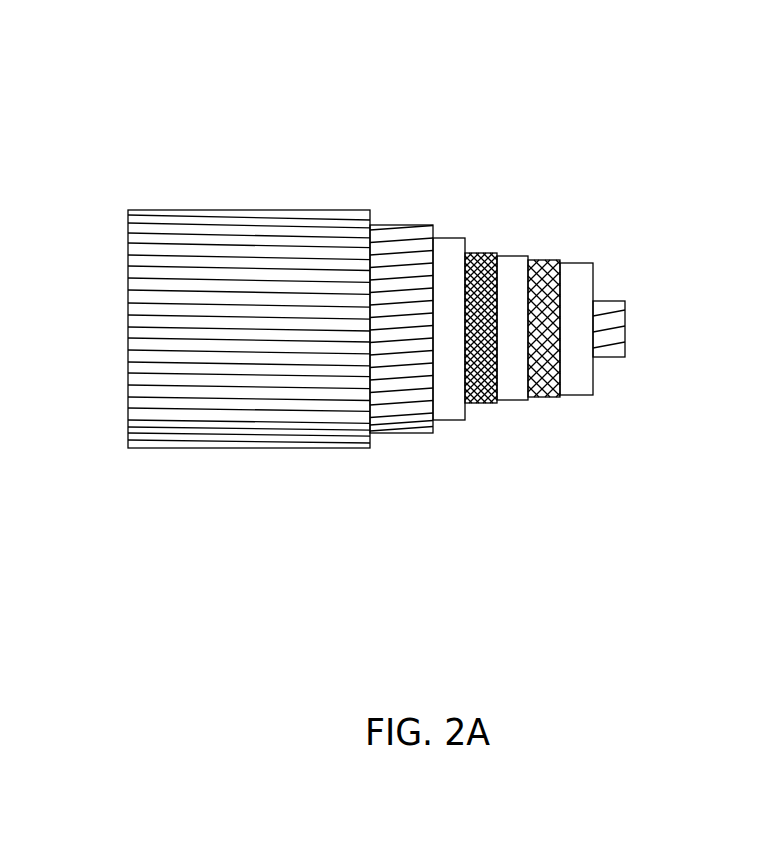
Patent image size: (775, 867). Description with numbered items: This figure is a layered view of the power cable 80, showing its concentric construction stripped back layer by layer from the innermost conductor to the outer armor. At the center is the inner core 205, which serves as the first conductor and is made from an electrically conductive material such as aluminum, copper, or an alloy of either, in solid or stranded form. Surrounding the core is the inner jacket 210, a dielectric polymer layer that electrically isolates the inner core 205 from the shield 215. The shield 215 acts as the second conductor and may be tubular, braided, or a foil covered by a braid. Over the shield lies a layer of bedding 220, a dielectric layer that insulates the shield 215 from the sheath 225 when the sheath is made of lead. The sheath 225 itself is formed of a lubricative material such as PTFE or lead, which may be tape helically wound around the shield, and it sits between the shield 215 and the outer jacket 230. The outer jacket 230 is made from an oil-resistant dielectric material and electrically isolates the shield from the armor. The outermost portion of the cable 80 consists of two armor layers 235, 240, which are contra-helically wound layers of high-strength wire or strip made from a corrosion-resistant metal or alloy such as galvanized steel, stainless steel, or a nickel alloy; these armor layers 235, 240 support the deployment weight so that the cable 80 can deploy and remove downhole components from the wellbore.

The power cable 80 is at (225, 160).
The inner core 205 is at (625, 320).
The inner jacket 210 is at (579, 263).
The shield 215 is at (542, 258).
The bedding 220 is at (517, 255).
The sheath 225 is at (482, 403).
The outer jacket 230 is at (450, 420).
The armor layer 235 is at (402, 437).
The armor layer 240 is at (217, 448).